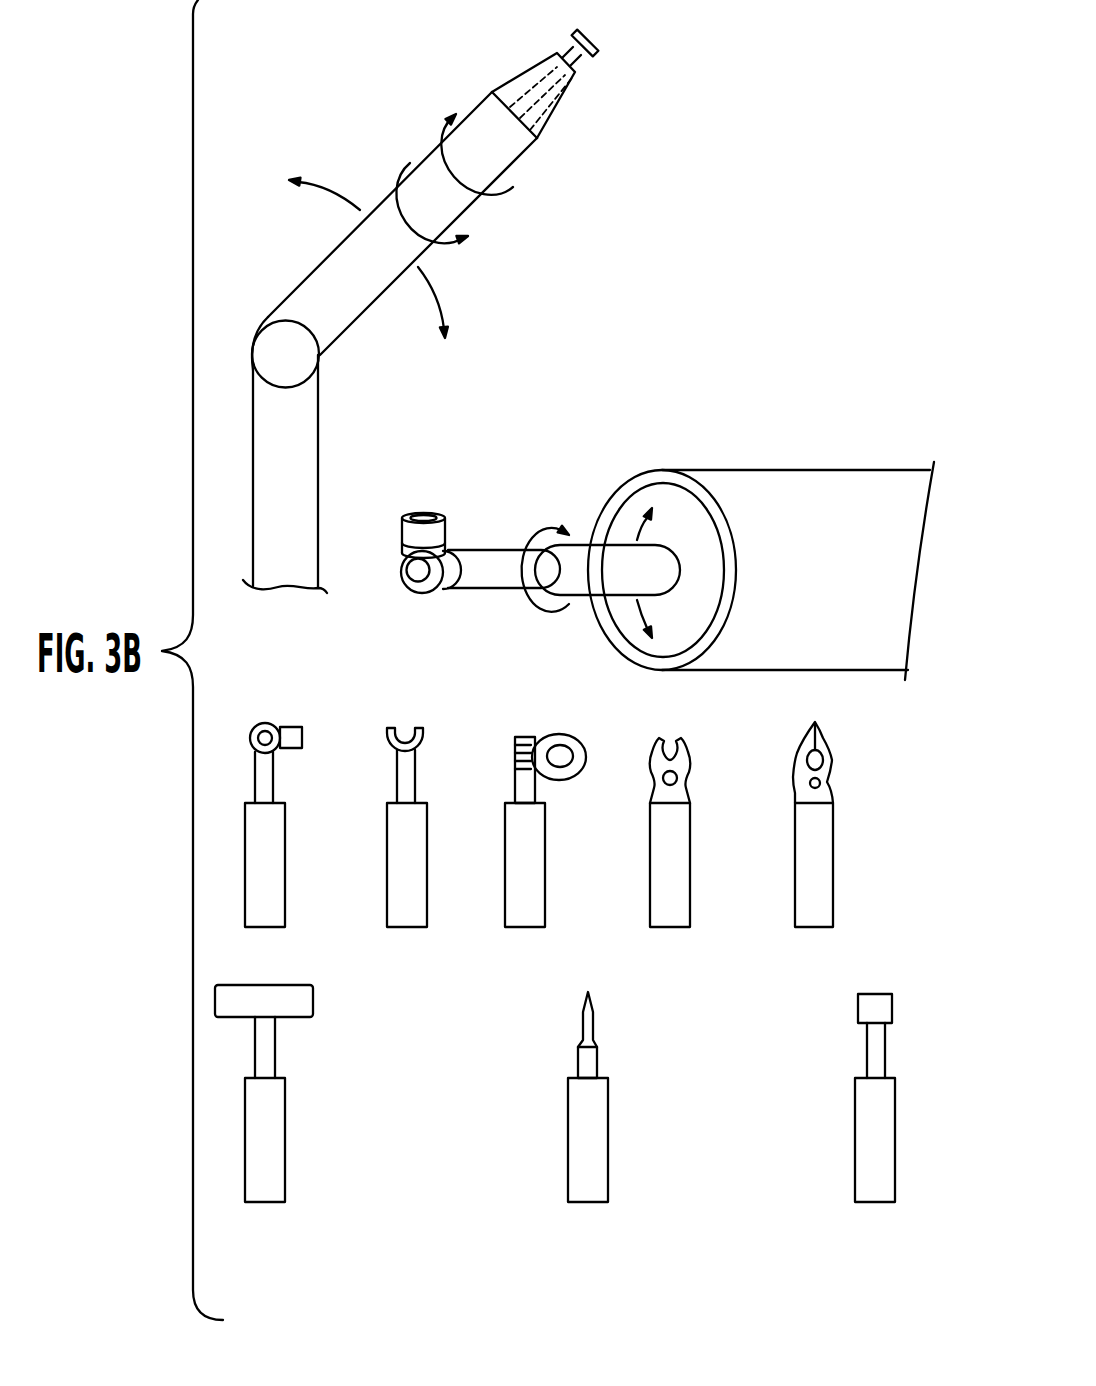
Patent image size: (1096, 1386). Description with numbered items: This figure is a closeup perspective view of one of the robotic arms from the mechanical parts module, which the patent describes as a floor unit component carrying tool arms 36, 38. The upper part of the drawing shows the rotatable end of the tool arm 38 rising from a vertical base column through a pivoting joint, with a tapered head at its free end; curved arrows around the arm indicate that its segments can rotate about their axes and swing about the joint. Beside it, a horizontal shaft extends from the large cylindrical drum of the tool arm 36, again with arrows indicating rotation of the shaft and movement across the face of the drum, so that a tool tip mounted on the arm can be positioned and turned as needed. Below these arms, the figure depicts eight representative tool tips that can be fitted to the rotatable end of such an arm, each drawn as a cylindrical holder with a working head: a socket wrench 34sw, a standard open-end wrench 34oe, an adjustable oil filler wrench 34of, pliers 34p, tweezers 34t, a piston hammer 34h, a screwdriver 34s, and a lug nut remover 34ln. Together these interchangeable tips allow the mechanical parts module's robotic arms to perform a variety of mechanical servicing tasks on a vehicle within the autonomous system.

The tool arm 38 is at (307, 438).
The tool arm 36 is at (810, 596).
The socket wrench 34sw is at (275, 880).
The standard open-end wrench 34oe is at (412, 880).
The adjustable oil filler wrench 34of is at (533, 880).
The pliers 34p is at (680, 880).
The tweezers 34t is at (825, 890).
The piston hammer 34h is at (275, 1157).
The screwdriver 34s is at (597, 1157).
The lug nut remover 34ln is at (885, 1158).